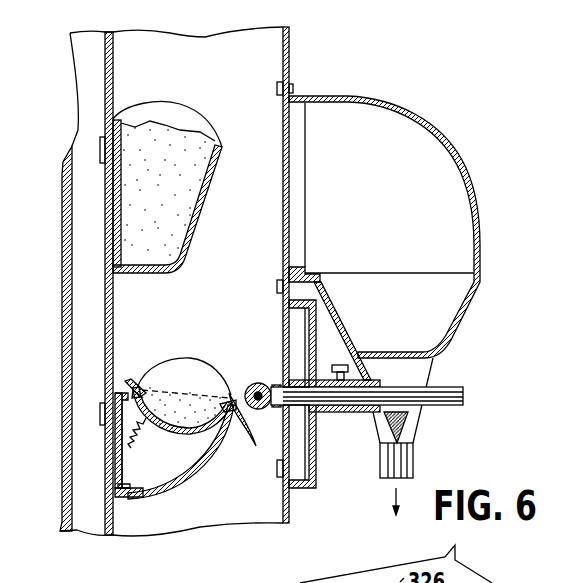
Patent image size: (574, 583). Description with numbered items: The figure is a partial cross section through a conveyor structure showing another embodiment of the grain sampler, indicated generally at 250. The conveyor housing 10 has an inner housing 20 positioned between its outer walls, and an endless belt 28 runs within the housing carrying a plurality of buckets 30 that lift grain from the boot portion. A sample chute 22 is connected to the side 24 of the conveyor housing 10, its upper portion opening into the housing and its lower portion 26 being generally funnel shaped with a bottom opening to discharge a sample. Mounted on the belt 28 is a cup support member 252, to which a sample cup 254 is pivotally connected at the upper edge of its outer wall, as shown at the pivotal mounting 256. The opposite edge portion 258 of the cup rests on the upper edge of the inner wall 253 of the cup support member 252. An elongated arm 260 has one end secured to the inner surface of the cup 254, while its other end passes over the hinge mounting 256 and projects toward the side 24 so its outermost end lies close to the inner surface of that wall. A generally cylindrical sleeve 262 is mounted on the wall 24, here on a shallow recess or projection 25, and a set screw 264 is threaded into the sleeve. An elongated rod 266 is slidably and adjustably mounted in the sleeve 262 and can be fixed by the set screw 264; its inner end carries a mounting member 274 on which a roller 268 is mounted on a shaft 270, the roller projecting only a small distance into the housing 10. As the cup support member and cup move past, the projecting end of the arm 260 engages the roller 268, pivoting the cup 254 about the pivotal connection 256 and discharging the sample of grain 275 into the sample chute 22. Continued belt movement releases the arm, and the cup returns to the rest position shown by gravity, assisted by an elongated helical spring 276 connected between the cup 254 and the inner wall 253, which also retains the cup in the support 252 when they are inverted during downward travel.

The conveyor housing 10 is at (206, 40).
The inner housing 20 is at (72, 378).
The sample chute 22 is at (388, 102).
The side 24 is at (290, 60).
The shallow recess or projection 25 is at (316, 468).
The lower portion 26 is at (457, 323).
The endless belt 28 is at (114, 78).
The bucket 30 is at (205, 182).
The sampler 250 is at (153, 533).
The cup support member 252 is at (143, 497).
The inner wall 253 is at (122, 457).
The sample cup 254 is at (201, 433).
The pivotal mounting 256 is at (237, 400).
The edge portion 258 is at (134, 381).
The elongated arm 260 is at (188, 358).
The sleeve 262 is at (363, 406).
The set screw 264 is at (341, 366).
The rod 266 is at (443, 405).
The roller 268 is at (254, 384).
The shaft 270 is at (262, 411).
The mounting member 274 is at (297, 387).
The sample of grain 275 is at (181, 408).
The helical spring 276 is at (128, 440).